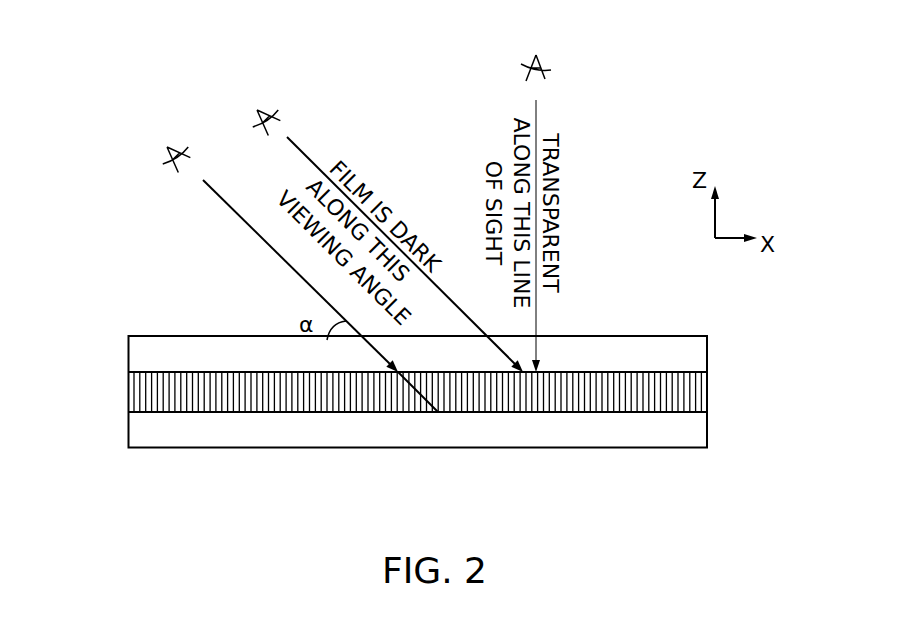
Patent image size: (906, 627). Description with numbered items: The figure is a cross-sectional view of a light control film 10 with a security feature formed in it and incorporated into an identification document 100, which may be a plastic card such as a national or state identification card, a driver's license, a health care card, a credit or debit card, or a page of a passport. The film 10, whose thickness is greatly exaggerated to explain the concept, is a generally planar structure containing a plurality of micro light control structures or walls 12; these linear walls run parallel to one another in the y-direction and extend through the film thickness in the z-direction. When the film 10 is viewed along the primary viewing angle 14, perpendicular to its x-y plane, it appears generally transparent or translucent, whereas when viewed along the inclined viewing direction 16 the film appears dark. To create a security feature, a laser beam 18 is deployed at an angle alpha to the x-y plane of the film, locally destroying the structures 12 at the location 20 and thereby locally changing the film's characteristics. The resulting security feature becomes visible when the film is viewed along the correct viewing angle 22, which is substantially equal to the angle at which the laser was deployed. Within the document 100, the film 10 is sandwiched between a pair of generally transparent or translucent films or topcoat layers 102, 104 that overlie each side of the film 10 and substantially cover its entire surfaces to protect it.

The light control film 10 is at (548, 413).
The micro light control structures 12 is at (480, 402).
The primary viewing angle 14 is at (551, 70).
The viewing direction 16 is at (260, 107).
The laser beam 18 is at (212, 195).
The location 20 is at (433, 413).
The correct viewing angle 22 is at (170, 142).
The identification document 100 is at (662, 334).
The transparent film 102 is at (633, 350).
The transparent film 104 is at (640, 432).